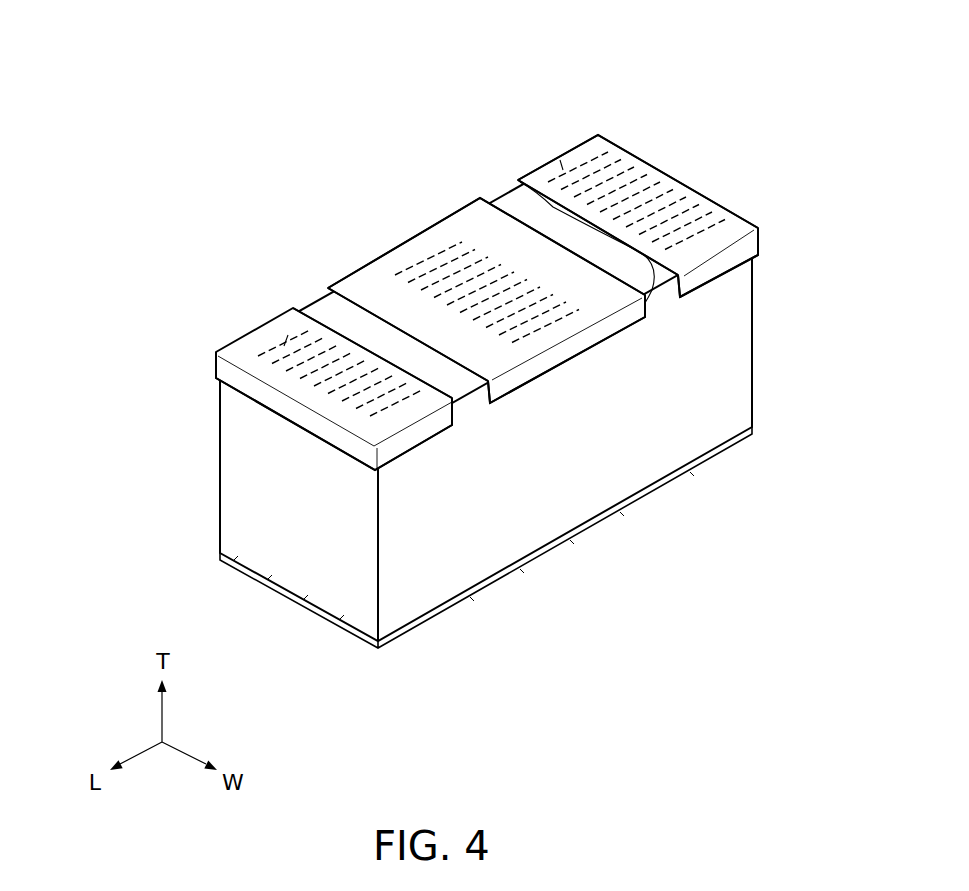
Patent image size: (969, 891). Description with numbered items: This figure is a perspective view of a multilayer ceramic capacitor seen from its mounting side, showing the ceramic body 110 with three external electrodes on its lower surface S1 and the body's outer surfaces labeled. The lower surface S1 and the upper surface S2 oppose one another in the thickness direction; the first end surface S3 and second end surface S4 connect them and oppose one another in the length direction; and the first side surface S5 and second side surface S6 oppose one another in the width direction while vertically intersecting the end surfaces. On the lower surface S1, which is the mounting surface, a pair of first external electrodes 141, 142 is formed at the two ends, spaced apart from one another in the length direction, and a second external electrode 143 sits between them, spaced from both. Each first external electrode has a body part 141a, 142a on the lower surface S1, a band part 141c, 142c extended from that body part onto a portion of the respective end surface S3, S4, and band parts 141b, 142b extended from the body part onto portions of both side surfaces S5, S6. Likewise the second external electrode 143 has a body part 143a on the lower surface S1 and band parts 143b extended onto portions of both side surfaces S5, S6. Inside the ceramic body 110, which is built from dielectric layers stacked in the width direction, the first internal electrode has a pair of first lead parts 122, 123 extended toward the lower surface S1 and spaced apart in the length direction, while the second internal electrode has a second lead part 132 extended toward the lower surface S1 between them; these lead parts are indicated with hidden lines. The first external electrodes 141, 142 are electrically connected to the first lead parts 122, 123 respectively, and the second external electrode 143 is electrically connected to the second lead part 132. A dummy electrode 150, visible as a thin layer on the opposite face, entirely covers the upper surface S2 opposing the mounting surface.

The ceramic body 110 is at (433, 583).
The first lead part 122 is at (288, 335).
The first lead part 123 is at (563, 170).
The second lead part 132 is at (560, 324).
The first external electrode 141 is at (72, 410).
The body part 141a is at (320, 397).
The band part 141b is at (225, 337).
The band part 141c is at (262, 394).
The first external electrode 142 is at (818, 53).
The body part 142a is at (628, 163).
The band part 142b is at (575, 150).
The band part 142c is at (703, 202).
The second external electrode 143 is at (510, 109).
The body part 143a is at (460, 228).
The band parts 143b is at (410, 247).
The dummy electrode 150 is at (640, 514).
The lower surface S1 is at (376, 330).
The upper surface S2 is at (513, 559).
The first end surface S3 is at (232, 529).
The second end surface S4 is at (740, 300).
The first side surface S5 is at (318, 310).
The second side surface S6 is at (740, 379).